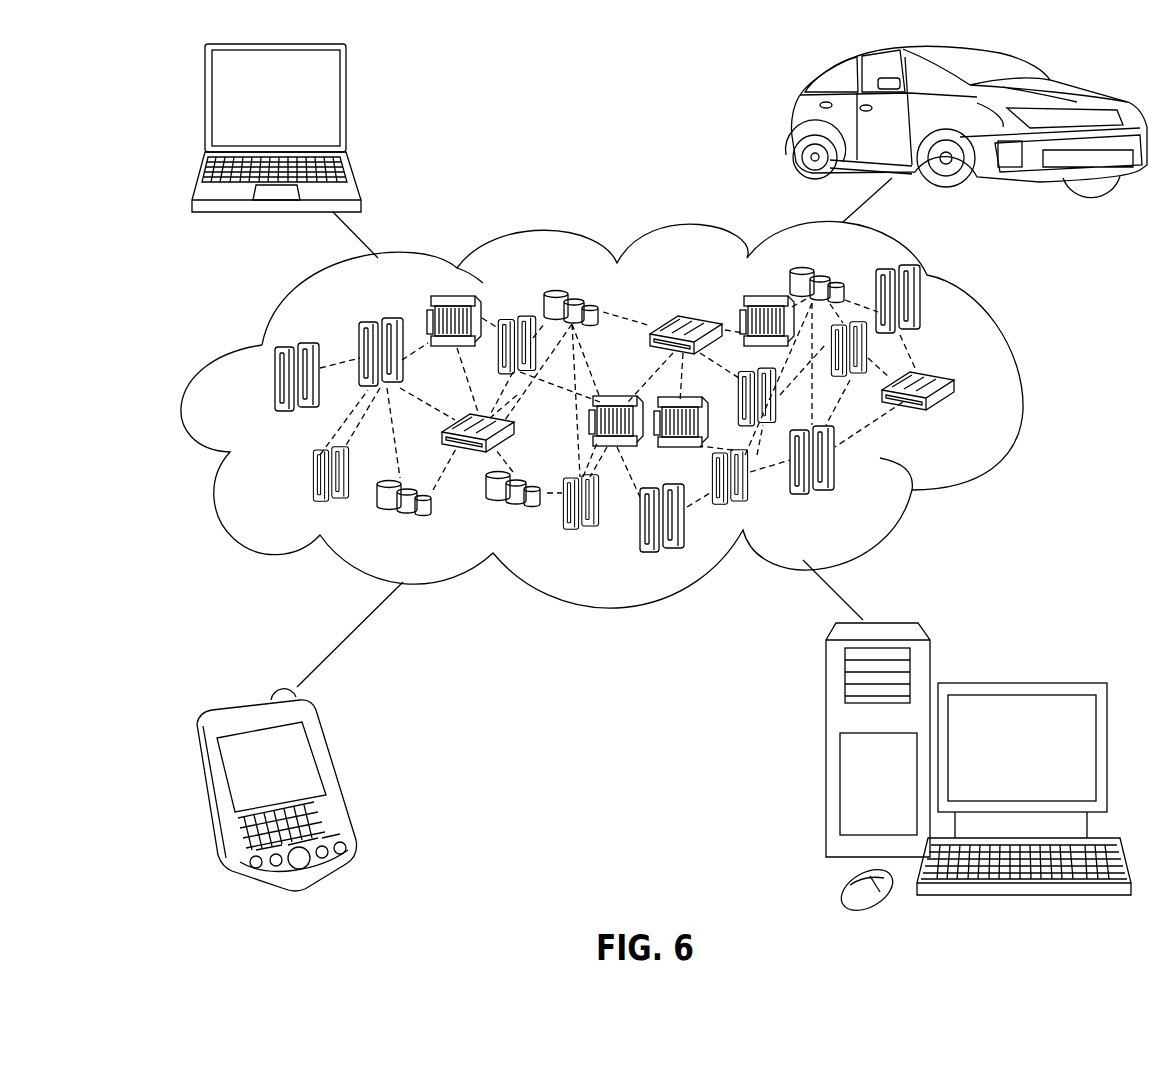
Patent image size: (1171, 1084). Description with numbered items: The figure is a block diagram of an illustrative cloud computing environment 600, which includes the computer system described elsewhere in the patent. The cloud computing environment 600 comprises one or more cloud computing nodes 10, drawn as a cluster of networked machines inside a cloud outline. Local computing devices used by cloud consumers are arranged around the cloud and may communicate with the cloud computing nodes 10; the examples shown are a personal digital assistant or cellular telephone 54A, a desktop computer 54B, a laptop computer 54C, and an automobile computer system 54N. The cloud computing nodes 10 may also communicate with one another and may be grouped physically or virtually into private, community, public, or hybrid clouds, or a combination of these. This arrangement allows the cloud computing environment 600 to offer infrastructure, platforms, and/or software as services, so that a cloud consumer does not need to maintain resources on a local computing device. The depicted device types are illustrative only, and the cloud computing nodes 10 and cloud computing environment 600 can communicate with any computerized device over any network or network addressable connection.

The cloud computing environment 600 is at (639, 414).
The cloud computing nodes 10 is at (962, 416).
The personal digital assistant (PDA) or cellular telephone 54A is at (337, 780).
The desktop computer 54B is at (1022, 683).
The laptop computer 54C is at (348, 107).
The automobile computer system 54N is at (793, 123).